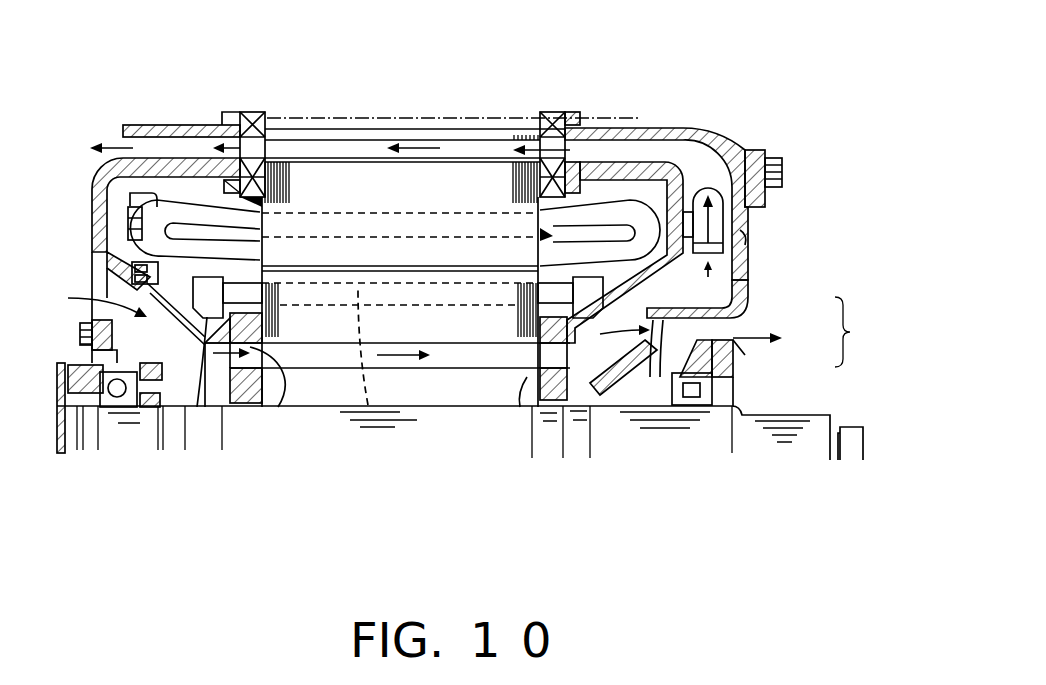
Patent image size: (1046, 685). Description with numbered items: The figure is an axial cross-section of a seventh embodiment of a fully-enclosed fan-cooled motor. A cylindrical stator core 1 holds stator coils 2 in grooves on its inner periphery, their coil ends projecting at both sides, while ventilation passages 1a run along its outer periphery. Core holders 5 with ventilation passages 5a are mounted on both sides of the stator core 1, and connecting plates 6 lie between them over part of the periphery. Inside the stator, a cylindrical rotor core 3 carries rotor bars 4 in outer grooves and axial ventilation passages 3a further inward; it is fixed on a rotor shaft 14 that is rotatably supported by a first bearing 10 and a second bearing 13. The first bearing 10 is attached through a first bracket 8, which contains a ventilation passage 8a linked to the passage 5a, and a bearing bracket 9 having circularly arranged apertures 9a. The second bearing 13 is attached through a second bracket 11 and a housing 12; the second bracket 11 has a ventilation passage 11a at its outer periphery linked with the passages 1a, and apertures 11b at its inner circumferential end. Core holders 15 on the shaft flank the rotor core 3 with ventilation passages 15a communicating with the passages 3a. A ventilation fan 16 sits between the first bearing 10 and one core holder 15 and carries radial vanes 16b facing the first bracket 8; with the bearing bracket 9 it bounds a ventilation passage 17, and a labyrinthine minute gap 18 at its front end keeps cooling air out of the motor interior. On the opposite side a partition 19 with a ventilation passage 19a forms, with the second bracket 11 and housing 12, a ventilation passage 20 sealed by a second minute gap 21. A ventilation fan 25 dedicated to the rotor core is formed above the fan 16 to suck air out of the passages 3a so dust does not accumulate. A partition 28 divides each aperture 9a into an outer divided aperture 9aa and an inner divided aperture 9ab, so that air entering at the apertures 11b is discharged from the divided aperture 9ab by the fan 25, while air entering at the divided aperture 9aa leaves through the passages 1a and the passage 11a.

The stator core 1 is at (462, 173).
The ventilation passages 1a is at (350, 150).
The stator coils 2 is at (720, 185).
The rotor core 3 is at (483, 328).
The ventilation passages 3a is at (445, 360).
The rotor bars 4 is at (368, 405).
The core holders 5 is at (252, 143).
The ventilation passages 5a is at (253, 120).
The connecting plates 6 is at (415, 118).
The first bracket 8 is at (667, 133).
The ventilation passage 8a is at (610, 147).
The bearing bracket 9 is at (750, 268).
The apertures 9a is at (854, 332).
The divided aperture 9aa is at (750, 296).
The divided aperture 9ab is at (727, 347).
The first bearing 10 is at (690, 395).
The second bracket 11 is at (92, 187).
The ventilation passage 11a is at (172, 145).
The apertures 11b is at (92, 281).
The housing 12 is at (82, 353).
The second bearing 13 is at (108, 410).
The rotor shaft 14 is at (348, 412).
The core holders 15 is at (255, 410).
The ventilation passages 15a is at (273, 410).
The ventilation fan 16 is at (638, 220).
The radial vanes 16b is at (757, 232).
The ventilation passage 17 is at (650, 375).
The minute gap 18 is at (782, 168).
The partition 19 is at (178, 305).
The ventilation passage 19a is at (213, 410).
The ventilation passage 20 is at (140, 410).
The minute gap 21 is at (92, 254).
The ventilation fan 25 is at (607, 350).
The partition 28 is at (667, 400).